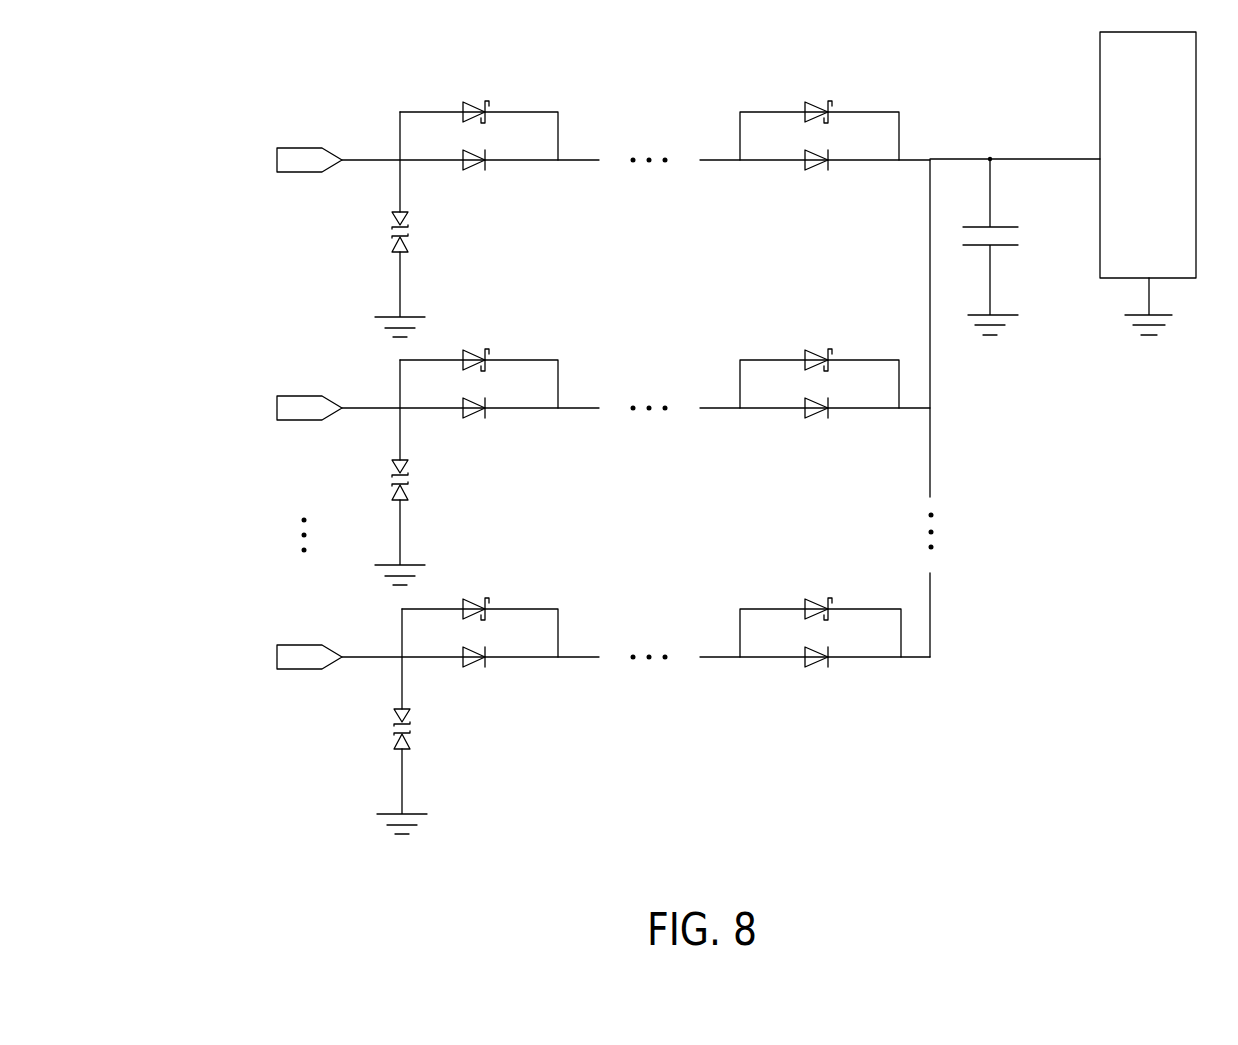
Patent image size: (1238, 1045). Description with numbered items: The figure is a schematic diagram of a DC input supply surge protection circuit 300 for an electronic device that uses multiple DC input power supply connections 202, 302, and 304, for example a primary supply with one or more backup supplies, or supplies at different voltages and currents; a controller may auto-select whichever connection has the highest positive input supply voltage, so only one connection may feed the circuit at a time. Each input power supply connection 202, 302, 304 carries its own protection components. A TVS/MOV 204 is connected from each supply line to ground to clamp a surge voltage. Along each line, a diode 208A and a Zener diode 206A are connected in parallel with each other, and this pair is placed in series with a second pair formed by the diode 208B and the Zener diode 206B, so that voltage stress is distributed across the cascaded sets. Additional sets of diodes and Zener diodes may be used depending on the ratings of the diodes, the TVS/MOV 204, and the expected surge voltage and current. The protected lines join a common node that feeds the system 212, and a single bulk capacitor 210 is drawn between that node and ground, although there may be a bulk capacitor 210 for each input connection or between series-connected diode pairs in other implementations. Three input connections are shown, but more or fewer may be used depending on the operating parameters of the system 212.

The DC input supply surge protection circuit 300 is at (226, 56).
The input power supply connection 202 is at (298, 148).
The input power supply connection 302 is at (298, 396).
The input power supply connection 304 is at (298, 645).
The TVS/MOV 204 is at (410, 233).
The Zener diode 206A is at (489, 102).
The diode 208A is at (478, 164).
The Zener diode 206B is at (832, 102).
The diode 208B is at (820, 164).
The bulk capacitor 210 is at (1001, 227).
The system 212 is at (1196, 152).